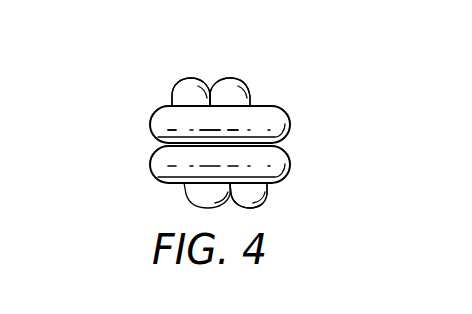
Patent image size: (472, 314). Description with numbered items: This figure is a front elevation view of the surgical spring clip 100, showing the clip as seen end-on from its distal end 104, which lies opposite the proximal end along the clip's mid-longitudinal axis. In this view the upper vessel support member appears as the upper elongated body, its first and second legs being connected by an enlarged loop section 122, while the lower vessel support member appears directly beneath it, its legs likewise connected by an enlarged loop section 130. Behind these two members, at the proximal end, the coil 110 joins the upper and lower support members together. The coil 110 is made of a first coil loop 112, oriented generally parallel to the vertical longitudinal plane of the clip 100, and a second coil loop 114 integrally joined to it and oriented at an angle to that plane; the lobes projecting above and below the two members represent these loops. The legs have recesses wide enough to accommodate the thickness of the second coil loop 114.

The surgical spring clip 100 is at (130, 70).
The distal end 104 is at (134, 106).
The coil 110 is at (243, 78).
The first coil loop 112 is at (190, 79).
The second coil loop 114 is at (267, 200).
The enlarged loop section 122 is at (278, 121).
The enlarged loop section 130 is at (170, 168).